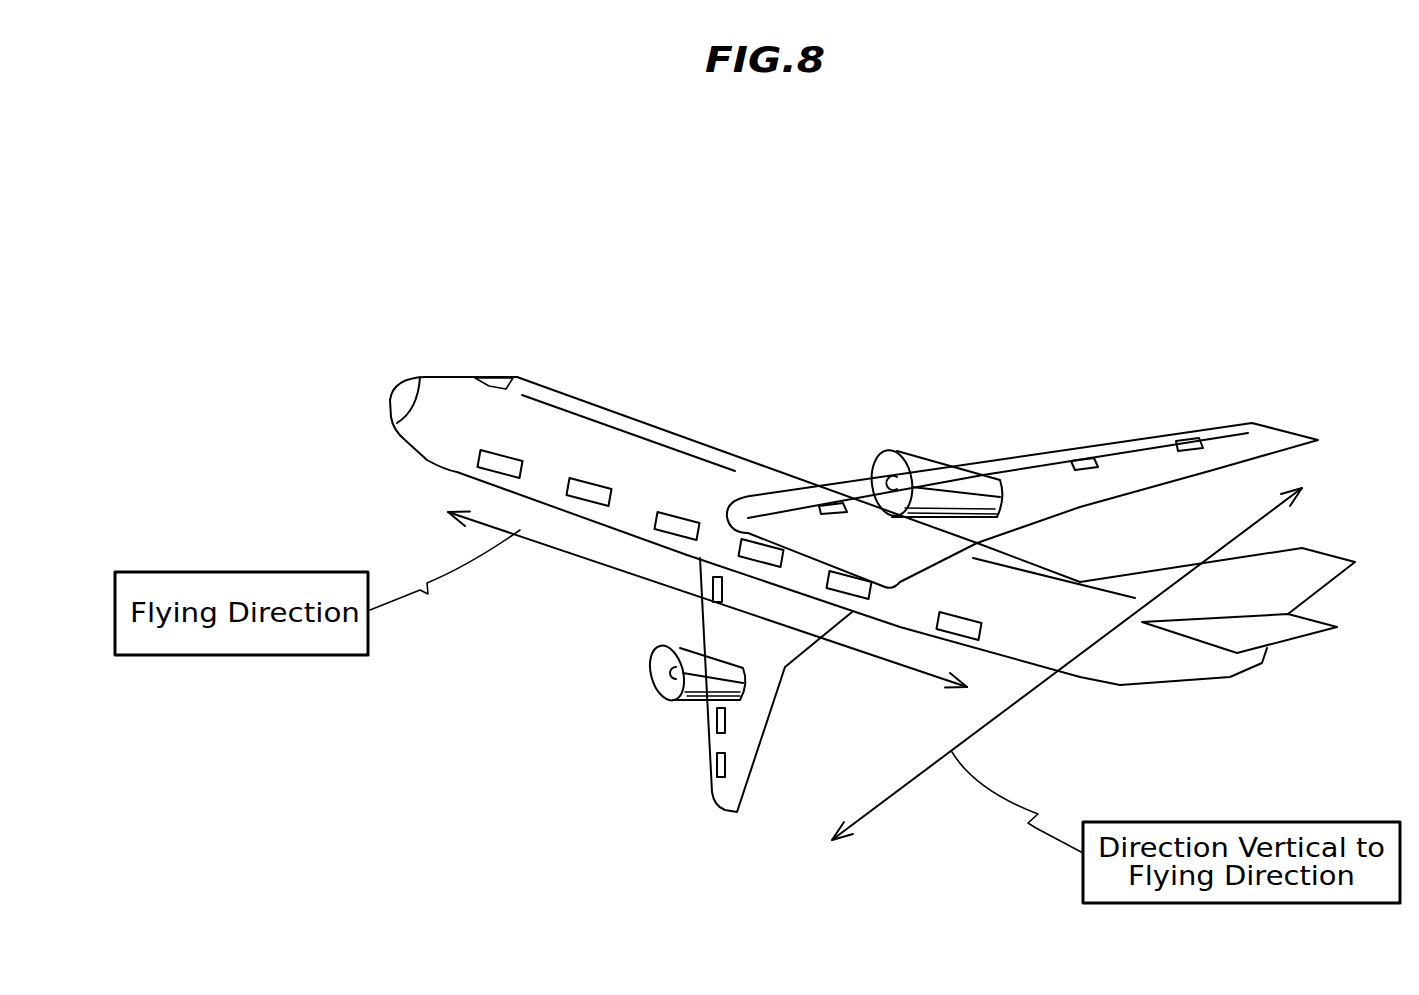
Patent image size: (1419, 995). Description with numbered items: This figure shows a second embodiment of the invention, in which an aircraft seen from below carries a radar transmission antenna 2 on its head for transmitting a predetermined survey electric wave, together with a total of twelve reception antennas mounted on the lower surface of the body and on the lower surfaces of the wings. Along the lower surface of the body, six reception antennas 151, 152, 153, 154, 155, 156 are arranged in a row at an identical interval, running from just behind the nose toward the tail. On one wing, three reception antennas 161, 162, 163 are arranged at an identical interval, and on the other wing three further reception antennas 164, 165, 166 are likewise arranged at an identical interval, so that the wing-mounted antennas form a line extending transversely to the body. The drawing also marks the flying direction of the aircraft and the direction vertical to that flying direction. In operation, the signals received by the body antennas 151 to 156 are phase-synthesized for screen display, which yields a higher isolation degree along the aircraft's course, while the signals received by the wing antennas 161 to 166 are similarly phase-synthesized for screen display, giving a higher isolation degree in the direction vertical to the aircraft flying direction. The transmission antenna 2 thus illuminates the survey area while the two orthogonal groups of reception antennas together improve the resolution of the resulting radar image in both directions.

The radar transmission antenna 2 is at (403, 397).
The reception antenna 151 is at (508, 462).
The reception antenna 152 is at (595, 492).
The reception antenna 153 is at (680, 525).
The reception antenna 154 is at (763, 552).
The reception antenna 155 is at (848, 587).
The reception antenna 156 is at (963, 628).
The reception antenna 161 is at (1185, 437).
The reception antenna 162 is at (1077, 460).
The reception antenna 163 is at (830, 507).
The reception antenna 164 is at (713, 583).
The reception antenna 165 is at (713, 716).
The reception antenna 166 is at (713, 764).